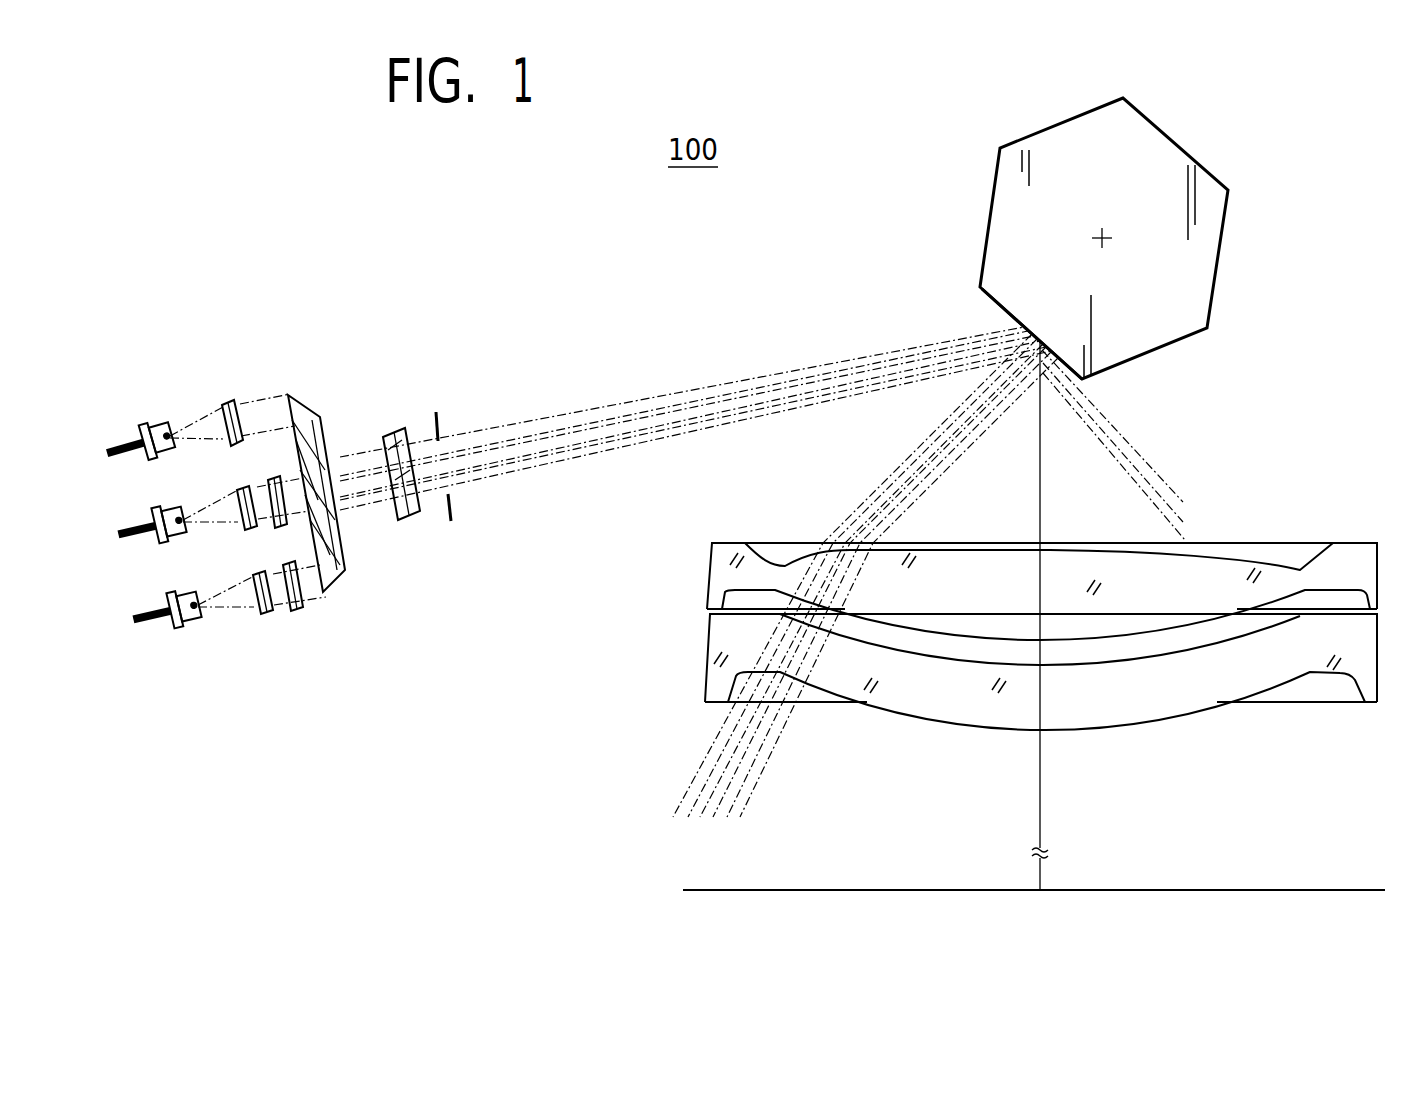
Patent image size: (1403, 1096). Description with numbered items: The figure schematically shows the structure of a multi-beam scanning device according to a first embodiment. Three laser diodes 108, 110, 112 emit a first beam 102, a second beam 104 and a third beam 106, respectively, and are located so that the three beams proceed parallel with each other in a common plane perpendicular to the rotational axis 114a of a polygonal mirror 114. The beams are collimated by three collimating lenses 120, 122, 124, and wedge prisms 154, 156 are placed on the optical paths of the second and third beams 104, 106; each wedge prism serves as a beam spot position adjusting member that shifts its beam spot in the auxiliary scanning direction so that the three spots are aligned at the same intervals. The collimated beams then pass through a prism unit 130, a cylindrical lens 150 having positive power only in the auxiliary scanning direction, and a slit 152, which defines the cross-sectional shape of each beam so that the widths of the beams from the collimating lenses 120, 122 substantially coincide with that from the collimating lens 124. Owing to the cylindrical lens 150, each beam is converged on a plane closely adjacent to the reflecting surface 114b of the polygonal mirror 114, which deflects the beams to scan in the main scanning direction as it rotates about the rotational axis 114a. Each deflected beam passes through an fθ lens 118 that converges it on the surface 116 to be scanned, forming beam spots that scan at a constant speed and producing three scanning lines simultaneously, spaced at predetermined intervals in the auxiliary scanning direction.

The first beam 102 is at (206, 416).
The second beam 104 is at (243, 611).
The third beam 106 is at (218, 527).
The laser diode 108 is at (146, 424).
The laser diode 110 is at (182, 624).
The laser diode 112 is at (160, 541).
The polygonal mirror 114 is at (1227, 110).
The rotational axis 114a is at (1155, 218).
The reflecting surface 114b is at (992, 310).
The surface to be scanned 116 is at (845, 848).
The fθ lens 118 is at (688, 540).
The collimating lens 120 is at (233, 404).
The collimating lens 122 is at (267, 628).
The collimating lens 124 is at (240, 492).
The prism unit 130 is at (343, 598).
The cylindrical lens 150 is at (405, 518).
The slit 152 is at (438, 438).
The wedge prism 154 is at (294, 612).
The wedge prism 156 is at (277, 533).